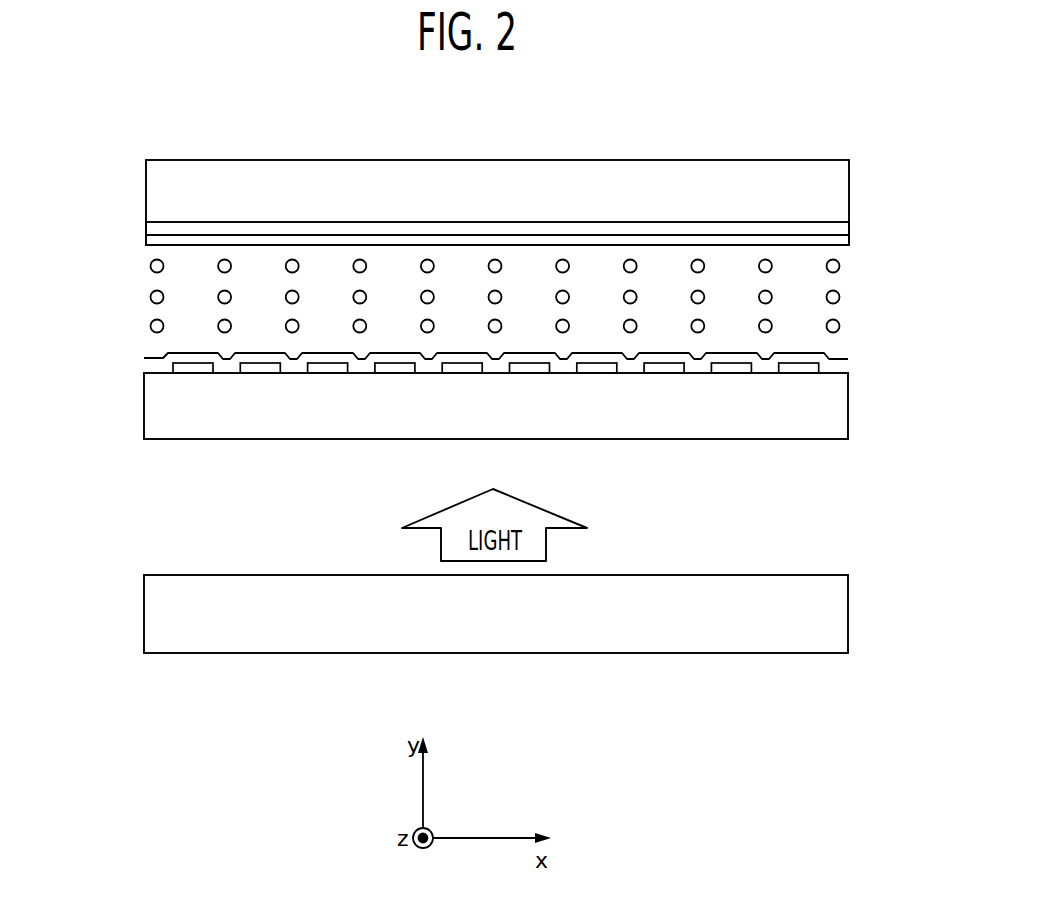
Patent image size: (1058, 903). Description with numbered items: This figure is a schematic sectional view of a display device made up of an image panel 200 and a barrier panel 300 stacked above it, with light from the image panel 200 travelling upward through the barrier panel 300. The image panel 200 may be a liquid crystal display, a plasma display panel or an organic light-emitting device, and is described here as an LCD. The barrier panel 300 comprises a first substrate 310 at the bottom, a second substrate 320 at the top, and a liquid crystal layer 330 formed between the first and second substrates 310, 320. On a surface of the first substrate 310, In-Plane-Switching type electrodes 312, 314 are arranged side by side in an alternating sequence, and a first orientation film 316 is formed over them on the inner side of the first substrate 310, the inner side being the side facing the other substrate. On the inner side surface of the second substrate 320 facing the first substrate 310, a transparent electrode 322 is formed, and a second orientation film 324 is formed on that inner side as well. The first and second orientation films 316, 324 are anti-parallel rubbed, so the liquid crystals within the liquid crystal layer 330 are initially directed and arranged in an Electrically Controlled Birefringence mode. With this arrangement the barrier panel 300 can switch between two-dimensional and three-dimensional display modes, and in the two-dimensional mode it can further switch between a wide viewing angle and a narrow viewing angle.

The barrier panel 300 is at (781, 132).
The second substrate 320 is at (843, 181).
The transparent electrode 322 is at (843, 228).
The second orientation film 324 is at (843, 240).
The liquid crystal layer 330 is at (140, 293).
The first substrate 310 is at (838, 421).
The first orientation film 316 is at (838, 368).
The IPS type electrode 312 is at (187, 368).
The IPS type electrode 314 is at (254, 368).
The image panel 200 is at (838, 626).